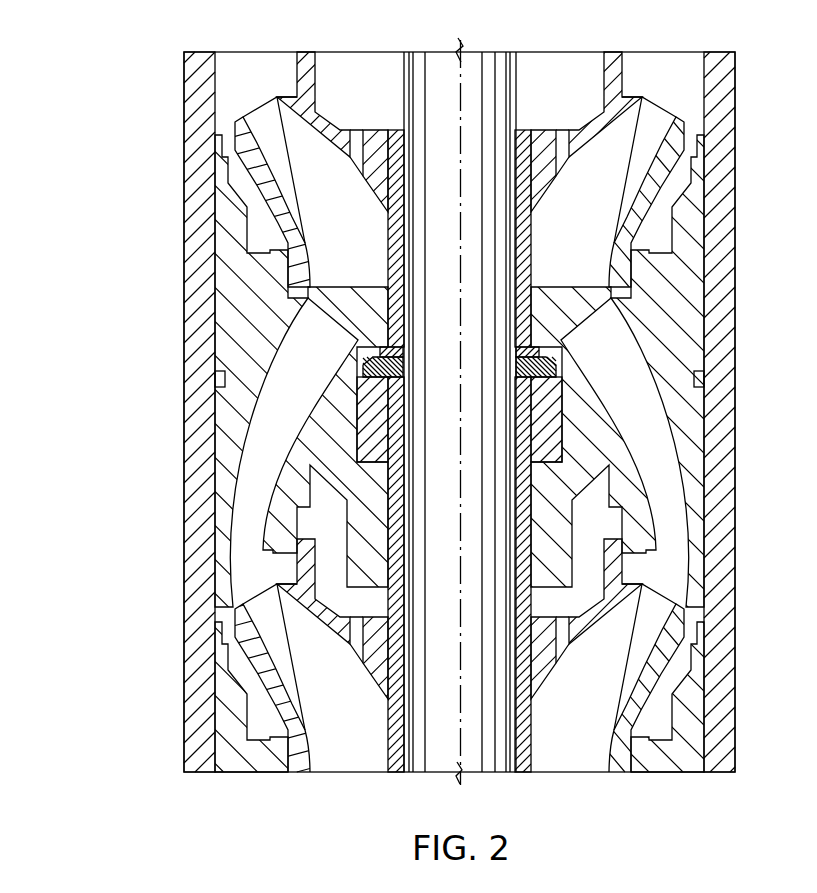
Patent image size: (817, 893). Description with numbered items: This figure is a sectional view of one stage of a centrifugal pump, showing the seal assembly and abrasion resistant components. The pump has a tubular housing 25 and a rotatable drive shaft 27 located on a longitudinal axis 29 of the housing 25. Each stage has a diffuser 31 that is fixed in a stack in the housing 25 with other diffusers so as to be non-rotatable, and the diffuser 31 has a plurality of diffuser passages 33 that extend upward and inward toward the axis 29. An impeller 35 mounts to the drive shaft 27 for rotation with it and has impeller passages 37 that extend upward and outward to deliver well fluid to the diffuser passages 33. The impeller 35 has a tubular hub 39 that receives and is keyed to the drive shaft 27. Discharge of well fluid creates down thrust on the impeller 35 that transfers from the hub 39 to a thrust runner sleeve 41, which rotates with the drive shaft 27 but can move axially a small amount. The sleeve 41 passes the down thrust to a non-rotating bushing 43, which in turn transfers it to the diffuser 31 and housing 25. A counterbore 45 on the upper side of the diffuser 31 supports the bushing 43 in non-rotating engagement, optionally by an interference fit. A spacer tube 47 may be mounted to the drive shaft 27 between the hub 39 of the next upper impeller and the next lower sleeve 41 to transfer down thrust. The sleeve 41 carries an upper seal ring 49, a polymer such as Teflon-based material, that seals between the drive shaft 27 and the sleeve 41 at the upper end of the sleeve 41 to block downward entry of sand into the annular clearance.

The tubular housing 25 is at (190, 205).
The drive shaft 27 is at (516, 98).
The longitudinal axis 29 is at (467, 743).
The diffuser 31 is at (222, 444).
The diffuser passages 33 is at (236, 478).
The impeller 35 is at (655, 236).
The impeller passages 37 is at (275, 187).
The tubular hub 39 is at (390, 740).
The thrust runner sleeve 41 is at (375, 348).
The bushing 43 is at (358, 414).
The counterbore 45 is at (560, 426).
The spacer tube 47 is at (550, 294).
The upper seal ring 49 is at (548, 351).